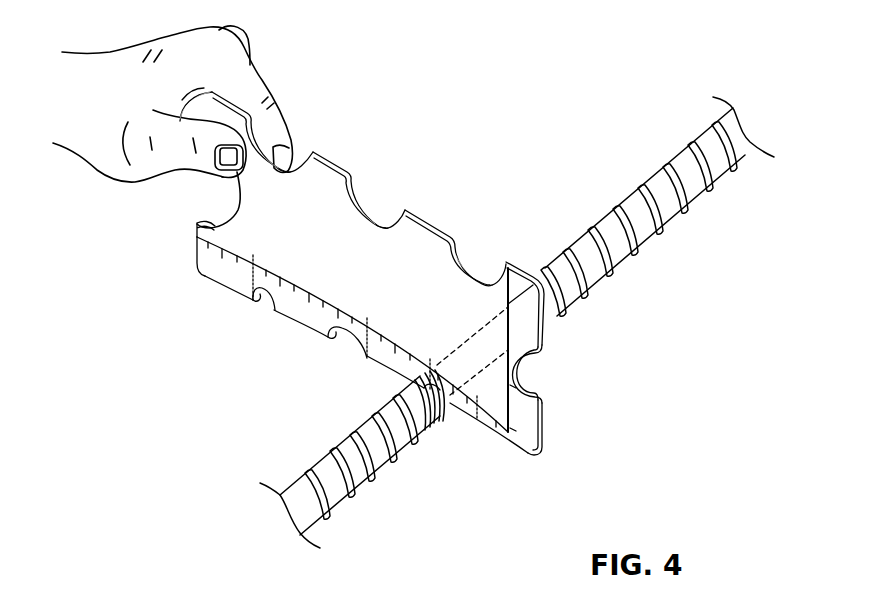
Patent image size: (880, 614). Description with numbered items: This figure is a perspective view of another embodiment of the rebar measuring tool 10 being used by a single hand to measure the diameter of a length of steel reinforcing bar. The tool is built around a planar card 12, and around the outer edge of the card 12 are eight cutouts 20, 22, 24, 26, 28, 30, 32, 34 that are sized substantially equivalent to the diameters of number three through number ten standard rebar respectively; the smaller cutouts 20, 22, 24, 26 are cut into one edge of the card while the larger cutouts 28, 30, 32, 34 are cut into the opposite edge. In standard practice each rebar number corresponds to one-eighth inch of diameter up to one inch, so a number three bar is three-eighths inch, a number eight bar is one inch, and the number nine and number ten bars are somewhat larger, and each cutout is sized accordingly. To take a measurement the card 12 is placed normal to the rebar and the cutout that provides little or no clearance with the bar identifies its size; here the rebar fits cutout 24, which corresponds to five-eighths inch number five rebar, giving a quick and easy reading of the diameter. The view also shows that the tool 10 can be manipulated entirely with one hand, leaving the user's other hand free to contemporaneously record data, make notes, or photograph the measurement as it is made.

The rebar measuring tool 10 is at (150, 352).
The planar card 12 is at (220, 278).
The cutout 20 is at (260, 297).
The cutout 22 is at (338, 331).
The cutout 24 is at (430, 428).
The cutout 26 is at (524, 379).
The cutout 28 is at (470, 265).
The cutout 30 is at (377, 212).
The cutout 32 is at (305, 156).
The cutout 34 is at (232, 195).